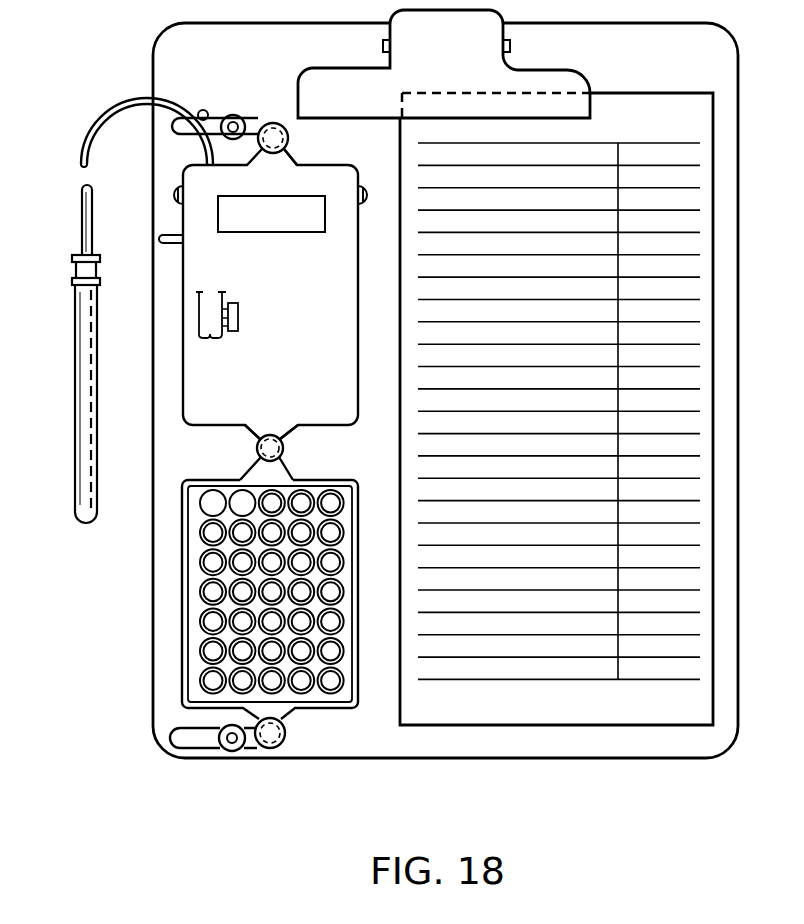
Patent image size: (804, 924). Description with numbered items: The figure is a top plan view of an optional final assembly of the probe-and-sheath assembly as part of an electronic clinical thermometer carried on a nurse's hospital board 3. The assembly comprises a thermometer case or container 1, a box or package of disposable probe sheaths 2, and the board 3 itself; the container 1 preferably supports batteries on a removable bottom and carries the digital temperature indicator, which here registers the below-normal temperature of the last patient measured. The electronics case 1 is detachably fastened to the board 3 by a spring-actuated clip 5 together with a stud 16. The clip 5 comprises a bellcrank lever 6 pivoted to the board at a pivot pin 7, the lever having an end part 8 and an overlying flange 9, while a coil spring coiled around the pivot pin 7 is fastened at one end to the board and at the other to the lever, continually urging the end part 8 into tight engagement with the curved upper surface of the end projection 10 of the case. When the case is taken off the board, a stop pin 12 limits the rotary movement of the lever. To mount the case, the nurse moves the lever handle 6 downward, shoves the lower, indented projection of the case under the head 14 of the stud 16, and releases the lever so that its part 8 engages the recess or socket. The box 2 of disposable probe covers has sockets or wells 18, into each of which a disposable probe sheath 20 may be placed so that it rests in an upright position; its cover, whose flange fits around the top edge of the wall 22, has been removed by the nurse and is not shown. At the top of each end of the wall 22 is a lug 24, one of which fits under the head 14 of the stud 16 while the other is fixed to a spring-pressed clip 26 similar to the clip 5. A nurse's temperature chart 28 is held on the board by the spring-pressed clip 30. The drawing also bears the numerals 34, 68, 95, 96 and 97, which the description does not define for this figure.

The thermometer case 1 is at (280, 365).
The package of disposable probe sheaths 2 is at (359, 563).
The nurse's hospital board 3 is at (682, 77).
The spring-actuated clip 5 is at (262, 107).
The bellcrank lever 6 is at (190, 135).
The pivot pin 7 is at (232, 114).
The end part 8 is at (281, 124).
The overlying flange 9 is at (260, 153).
The end projection 10 is at (298, 158).
The stop pin 12 is at (201, 110).
The head 14 is at (281, 436).
The stud 16 is at (270, 435).
The wells 18 is at (241, 496).
The disposable probe sheath 20 is at (337, 489).
The wall 22 is at (183, 637).
The lug 24 is at (291, 471).
The spring-pressed clip 26 is at (289, 738).
The nurse's temperature chart 28 is at (661, 131).
The spring-pressed clip 30 is at (456, 77).
The collar 34 is at (107, 246).
The side button 68 is at (370, 195).
The side switch 95 is at (164, 236).
The slide switch 96 is at (239, 310).
The switch guide 97 is at (208, 340).